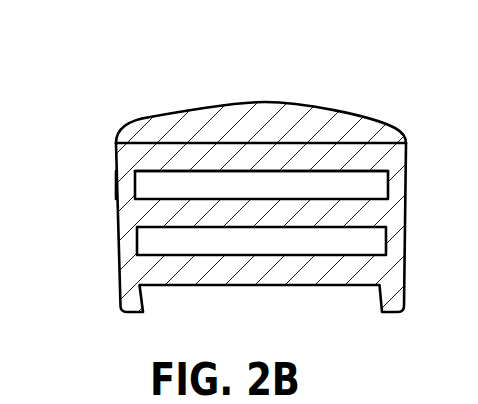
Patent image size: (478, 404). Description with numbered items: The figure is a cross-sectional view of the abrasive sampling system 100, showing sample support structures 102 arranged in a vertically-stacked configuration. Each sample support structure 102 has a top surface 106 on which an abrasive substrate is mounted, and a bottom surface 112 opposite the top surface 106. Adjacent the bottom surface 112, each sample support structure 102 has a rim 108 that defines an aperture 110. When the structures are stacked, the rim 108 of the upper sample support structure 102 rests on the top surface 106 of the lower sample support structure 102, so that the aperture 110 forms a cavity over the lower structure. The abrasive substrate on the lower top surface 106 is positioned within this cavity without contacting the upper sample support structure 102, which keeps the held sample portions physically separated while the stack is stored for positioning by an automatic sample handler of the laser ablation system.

The abrasive sampling system 100 is at (221, 163).
The sample support structure 102 is at (115, 162).
The top surface 106 is at (292, 118).
The rim 108 is at (117, 184).
The aperture 110 is at (185, 152).
The bottom surface 112 is at (297, 171).